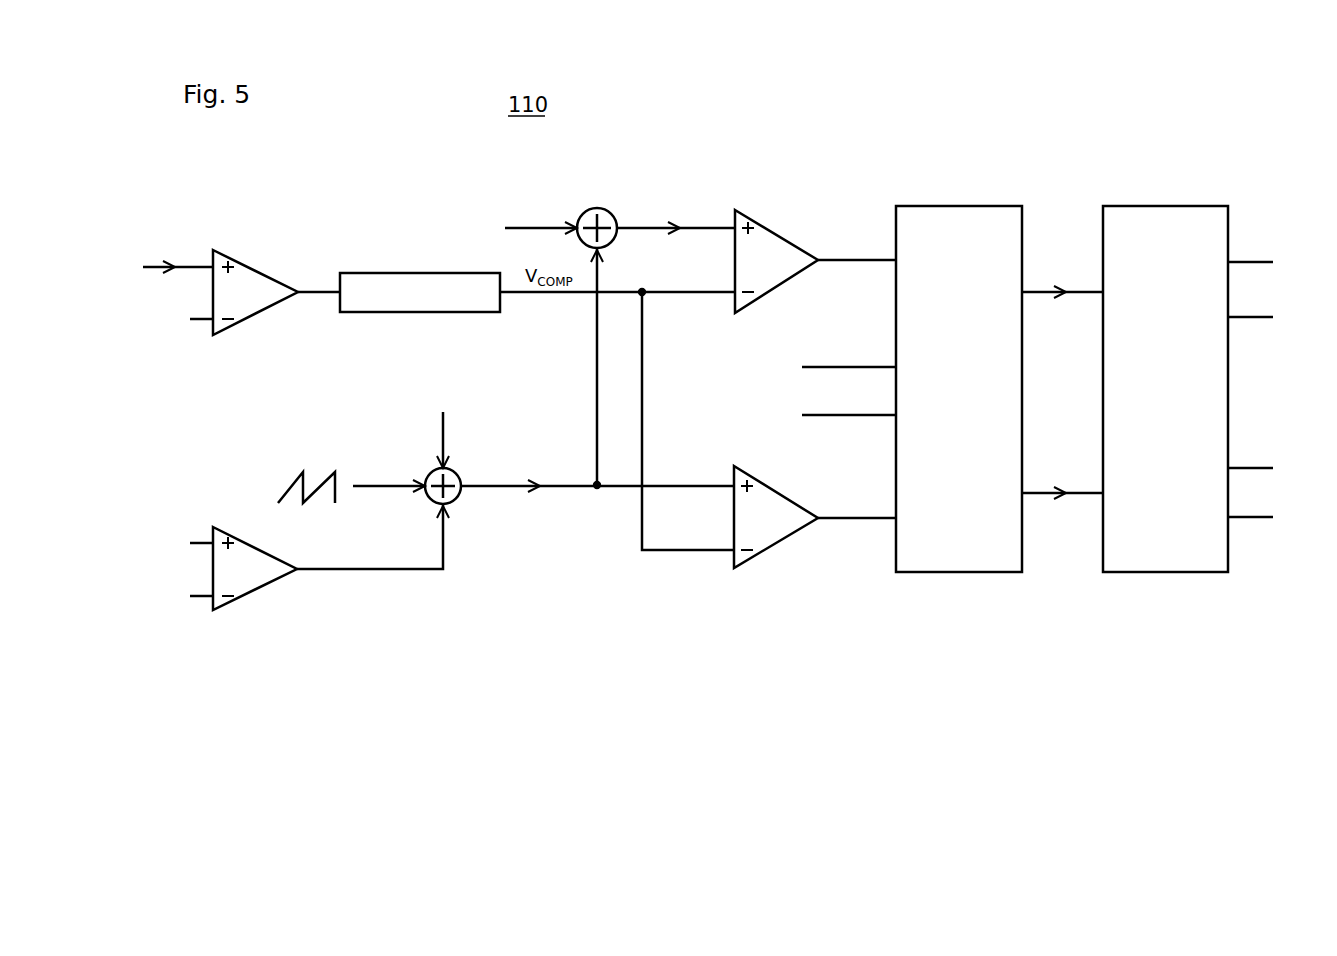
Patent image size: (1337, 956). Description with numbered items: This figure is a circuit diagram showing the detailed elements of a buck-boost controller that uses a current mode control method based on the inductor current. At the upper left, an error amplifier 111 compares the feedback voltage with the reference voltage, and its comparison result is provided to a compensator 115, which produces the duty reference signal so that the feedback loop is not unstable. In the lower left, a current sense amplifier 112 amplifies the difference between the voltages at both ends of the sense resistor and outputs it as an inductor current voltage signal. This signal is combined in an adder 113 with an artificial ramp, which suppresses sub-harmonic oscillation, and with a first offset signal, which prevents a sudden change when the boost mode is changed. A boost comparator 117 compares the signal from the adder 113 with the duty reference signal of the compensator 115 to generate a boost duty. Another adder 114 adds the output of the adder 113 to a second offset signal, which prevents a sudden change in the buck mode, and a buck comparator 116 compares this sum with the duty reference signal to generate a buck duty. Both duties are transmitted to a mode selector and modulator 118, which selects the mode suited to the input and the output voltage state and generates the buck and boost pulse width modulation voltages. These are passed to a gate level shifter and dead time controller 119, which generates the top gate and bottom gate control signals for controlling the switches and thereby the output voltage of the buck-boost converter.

The error amplifier 111 is at (250, 264).
The current sense amplifier 112 is at (289, 577).
The adder 113 is at (462, 502).
The another adder 114 is at (608, 211).
The compensator 115 is at (390, 313).
The buck comparator 116 is at (797, 240).
The boost comparator 117 is at (800, 535).
The mode selector & modulator 118 is at (980, 205).
The gate level shifter & dead time controller 119 is at (1175, 205).